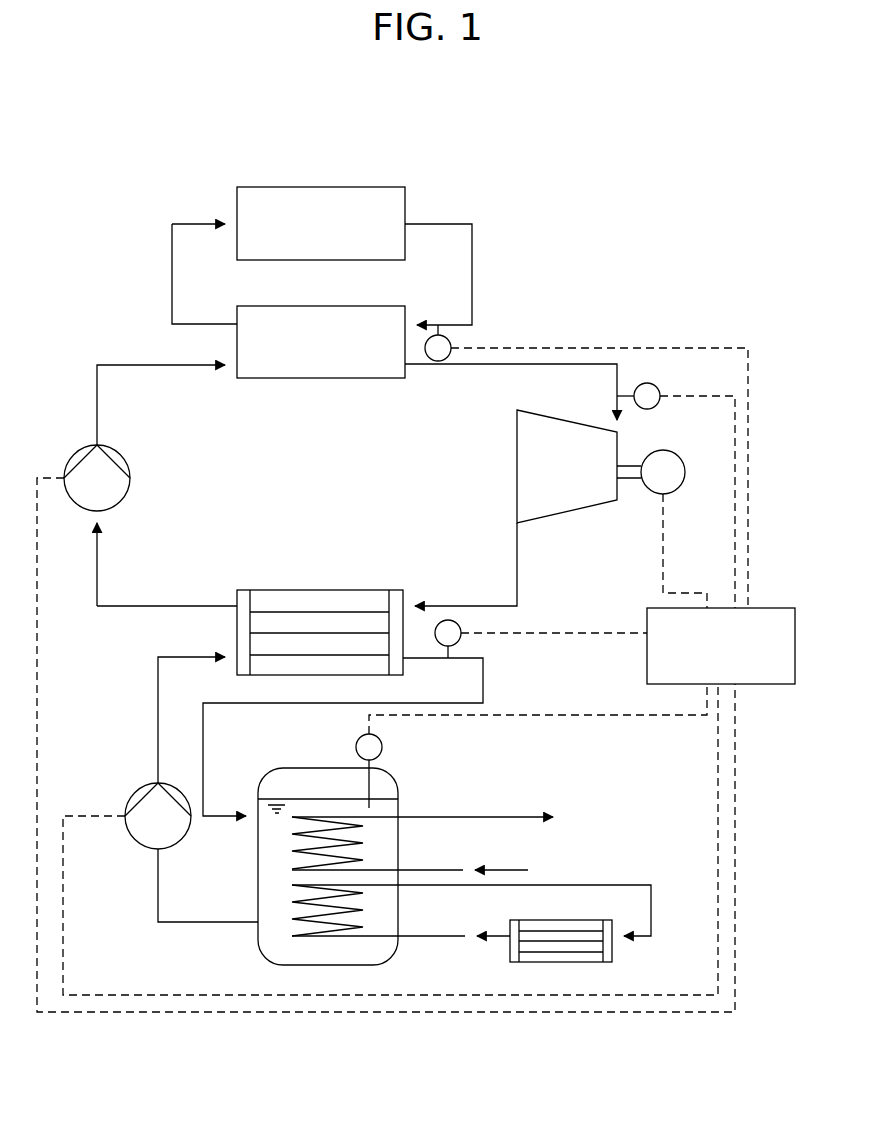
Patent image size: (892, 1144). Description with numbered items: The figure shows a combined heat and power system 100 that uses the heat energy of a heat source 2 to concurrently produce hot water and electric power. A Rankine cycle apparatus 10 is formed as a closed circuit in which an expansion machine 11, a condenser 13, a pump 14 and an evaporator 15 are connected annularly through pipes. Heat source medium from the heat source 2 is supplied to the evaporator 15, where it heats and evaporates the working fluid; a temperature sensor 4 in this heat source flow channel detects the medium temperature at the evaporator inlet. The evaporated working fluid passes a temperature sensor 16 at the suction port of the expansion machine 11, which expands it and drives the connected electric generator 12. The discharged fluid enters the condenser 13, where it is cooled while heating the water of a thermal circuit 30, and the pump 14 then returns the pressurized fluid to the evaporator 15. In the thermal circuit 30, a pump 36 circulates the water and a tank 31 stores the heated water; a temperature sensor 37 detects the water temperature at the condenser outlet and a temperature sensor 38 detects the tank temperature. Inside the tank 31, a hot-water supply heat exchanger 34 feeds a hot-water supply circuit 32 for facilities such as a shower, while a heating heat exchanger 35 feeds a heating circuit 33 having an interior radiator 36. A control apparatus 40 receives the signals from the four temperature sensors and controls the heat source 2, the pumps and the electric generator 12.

The combined heat and power system 100 is at (478, 158).
The heat source 2 is at (338, 187).
The temperature sensor 4 is at (453, 344).
The Rankine cycle apparatus 10 is at (107, 363).
The expansion machine 11 is at (528, 467).
The electric generator 12 is at (667, 448).
The condenser 13 is at (324, 600).
The pump 14 is at (68, 458).
The evaporator 15 is at (333, 378).
The temperature sensor 16 is at (656, 386).
The thermal circuit 30 is at (152, 710).
The tank 31 is at (398, 775).
The hot-water supply circuit 32 is at (504, 817).
The heating circuit 33 is at (590, 885).
The hot-water supply heat exchanger 34 is at (363, 838).
The heating heat exchanger 35 is at (363, 905).
The pump 36 is at (130, 840).
The temperature sensor 37 is at (461, 641).
The temperature sensor 38 is at (356, 742).
The control apparatus 40 is at (795, 634).